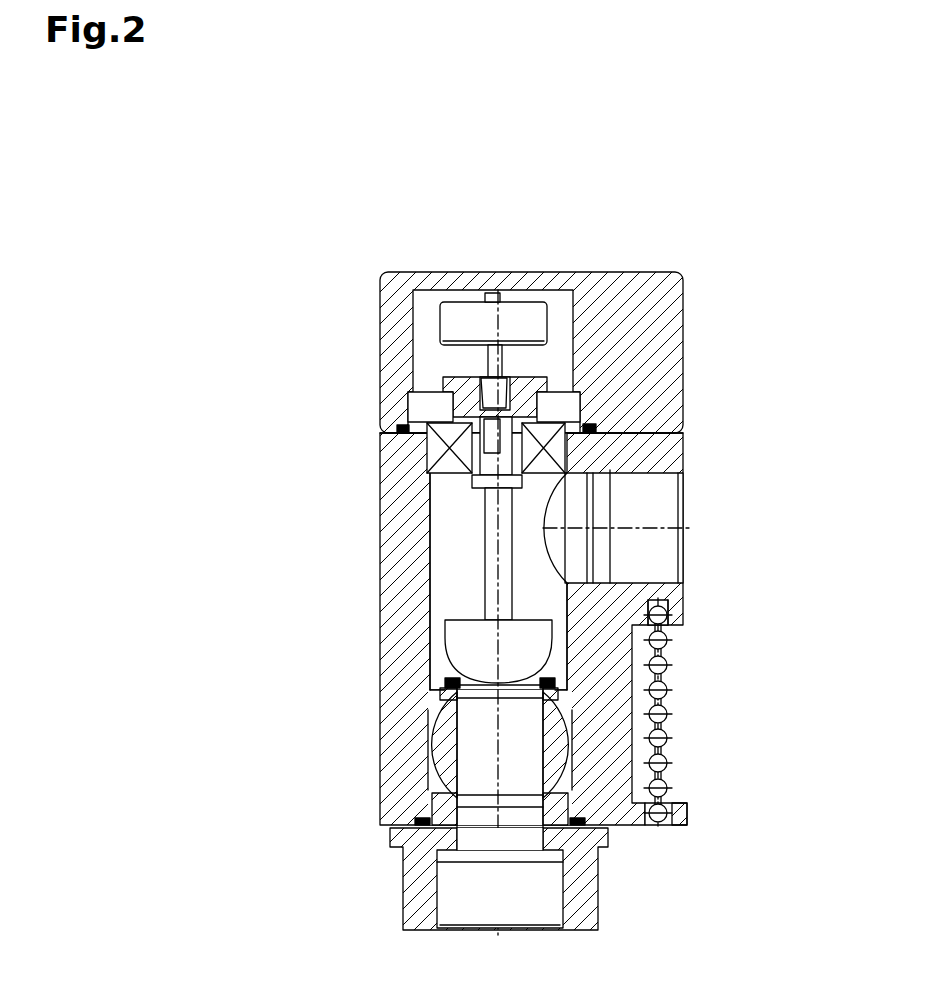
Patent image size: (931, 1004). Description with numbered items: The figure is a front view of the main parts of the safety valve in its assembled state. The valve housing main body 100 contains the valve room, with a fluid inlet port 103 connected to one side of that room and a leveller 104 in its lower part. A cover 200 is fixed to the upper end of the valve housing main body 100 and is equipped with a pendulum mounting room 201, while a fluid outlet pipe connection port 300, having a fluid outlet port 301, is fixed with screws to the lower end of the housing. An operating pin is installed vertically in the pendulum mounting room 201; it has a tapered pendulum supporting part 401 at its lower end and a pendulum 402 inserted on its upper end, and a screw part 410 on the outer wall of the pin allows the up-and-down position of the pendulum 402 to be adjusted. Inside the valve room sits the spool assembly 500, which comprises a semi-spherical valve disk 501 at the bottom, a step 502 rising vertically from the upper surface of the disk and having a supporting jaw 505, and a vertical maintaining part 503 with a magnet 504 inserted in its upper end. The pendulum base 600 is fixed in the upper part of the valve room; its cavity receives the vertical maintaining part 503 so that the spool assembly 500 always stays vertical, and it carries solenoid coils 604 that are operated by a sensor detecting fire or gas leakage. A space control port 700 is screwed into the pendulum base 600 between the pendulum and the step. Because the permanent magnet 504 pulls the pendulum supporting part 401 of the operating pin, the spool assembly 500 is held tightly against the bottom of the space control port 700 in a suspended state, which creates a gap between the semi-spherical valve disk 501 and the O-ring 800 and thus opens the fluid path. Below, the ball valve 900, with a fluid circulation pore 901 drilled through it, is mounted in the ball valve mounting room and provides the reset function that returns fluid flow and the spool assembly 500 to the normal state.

The valve housing main body 100 is at (397, 596).
The fluid inlet port 103 is at (667, 497).
The leveller 104 is at (663, 682).
The cover 200 is at (378, 300).
The pendulum mounting room 201 is at (432, 292).
The fluid outlet pipe connection port 300 is at (390, 840).
The fluid outlet port 301 is at (475, 917).
The pendulum supporting part 401 is at (580, 385).
The pendulum 402 is at (525, 300).
The screw part 410 is at (500, 357).
The spool assembly 500 is at (455, 617).
The semi-spherical valve disk 501 is at (458, 648).
The step 502 is at (487, 573).
The vertical maintaining part 503 is at (465, 462).
The magnet 504 is at (480, 458).
The supporting jaw 505 is at (525, 462).
The pendulum base 600 is at (425, 402).
The solenoid coils 604 is at (620, 440).
The space control port 700 is at (443, 378).
The O-ring 800 is at (663, 640).
The ball valve 900 is at (458, 737).
The fluid circulation pore 901 is at (460, 767).